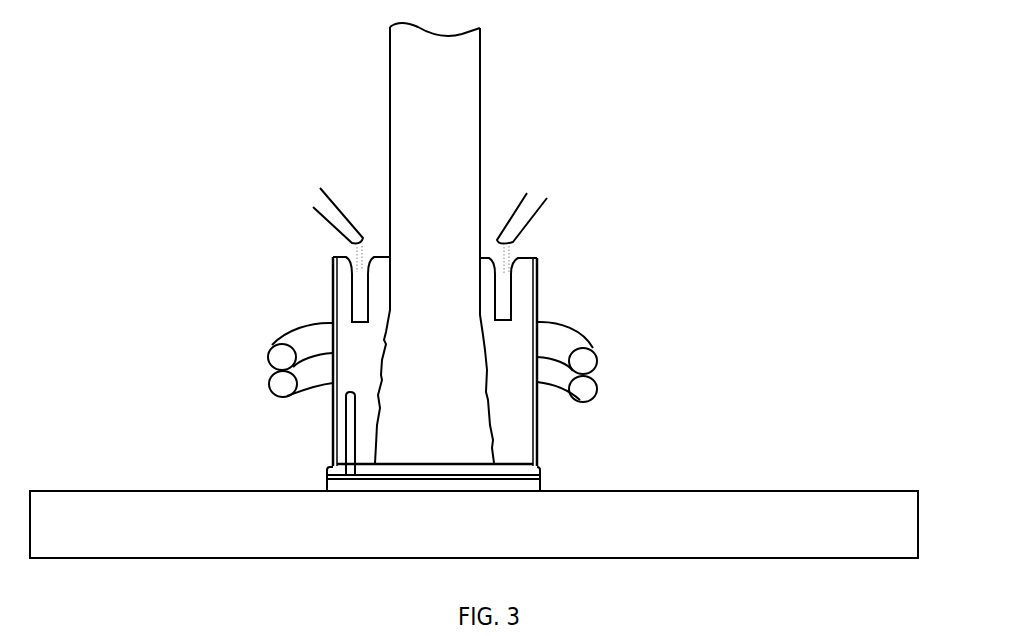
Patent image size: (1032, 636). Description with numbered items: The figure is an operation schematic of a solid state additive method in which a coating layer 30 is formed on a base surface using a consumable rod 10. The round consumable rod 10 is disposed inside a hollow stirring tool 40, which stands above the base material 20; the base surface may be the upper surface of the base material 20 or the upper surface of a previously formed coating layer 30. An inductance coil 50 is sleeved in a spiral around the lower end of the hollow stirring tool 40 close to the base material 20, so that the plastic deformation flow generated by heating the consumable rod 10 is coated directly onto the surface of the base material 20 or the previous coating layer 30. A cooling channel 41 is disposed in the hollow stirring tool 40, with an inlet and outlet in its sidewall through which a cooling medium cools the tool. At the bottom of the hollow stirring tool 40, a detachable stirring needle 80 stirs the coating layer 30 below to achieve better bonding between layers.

The consumable rod 10 is at (410, 110).
The base material 20 is at (120, 523).
The coating layer 30 is at (520, 487).
The hollow stirring tool 40 is at (520, 312).
The cooling channel 41 is at (360, 300).
The inductance coil 50 is at (565, 352).
The stirring needle 80 is at (348, 425).